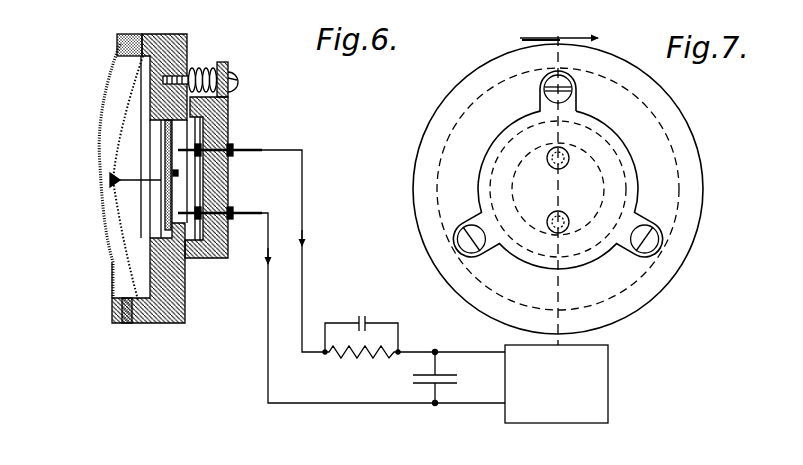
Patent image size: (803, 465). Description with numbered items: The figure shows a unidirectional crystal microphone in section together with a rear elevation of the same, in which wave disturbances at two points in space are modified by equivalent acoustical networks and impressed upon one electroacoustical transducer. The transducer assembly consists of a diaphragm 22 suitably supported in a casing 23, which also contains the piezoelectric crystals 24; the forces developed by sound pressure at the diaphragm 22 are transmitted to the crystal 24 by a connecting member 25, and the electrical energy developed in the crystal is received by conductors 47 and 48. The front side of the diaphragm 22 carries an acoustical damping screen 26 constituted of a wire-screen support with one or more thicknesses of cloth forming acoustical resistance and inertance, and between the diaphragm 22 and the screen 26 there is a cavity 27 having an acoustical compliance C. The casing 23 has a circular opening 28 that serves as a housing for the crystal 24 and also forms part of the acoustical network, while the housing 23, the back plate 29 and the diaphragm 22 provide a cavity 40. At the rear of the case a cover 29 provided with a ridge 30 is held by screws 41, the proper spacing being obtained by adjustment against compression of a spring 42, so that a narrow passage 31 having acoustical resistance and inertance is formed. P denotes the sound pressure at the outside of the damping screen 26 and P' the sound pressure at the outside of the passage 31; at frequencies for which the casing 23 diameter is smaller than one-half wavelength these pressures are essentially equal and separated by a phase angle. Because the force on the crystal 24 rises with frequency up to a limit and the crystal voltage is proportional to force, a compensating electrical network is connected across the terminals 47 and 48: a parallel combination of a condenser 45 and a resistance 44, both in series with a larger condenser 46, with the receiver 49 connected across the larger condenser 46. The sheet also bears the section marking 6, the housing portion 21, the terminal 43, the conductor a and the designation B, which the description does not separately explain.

In FIG. 6, the housing 21 is at (138, 323).
In FIG. 7, the housing 21 is at (432, 204).
In FIG. 6, the diaphragm 22 is at (138, 112).
In FIG. 6, the casing 23 is at (163, 46).
In FIG. 7, the casing 23 is at (432, 138).
In FIG. 6, the piezoelectric crystals 24 is at (178, 173).
In FIG. 6, the connecting member 25 is at (130, 188).
In FIG. 6, the acoustical damping screen 26 is at (100, 157).
In FIG. 6, the cavity 27 is at (112, 150).
In FIG. 6, the circular opening 28 is at (156, 155).
In FIG. 6, the back plate (cover) 29 is at (228, 101).
In FIG. 7, the back plate (cover) 29 is at (500, 133).
In FIG. 6, the ridge 30 is at (200, 266).
In FIG. 6, the narrow passage 31 is at (186, 266).
In FIG. 6, the cavity 40 is at (140, 131).
In FIG. 6, the screws 41 is at (232, 68).
In FIG. 7, the screws 41 is at (573, 97).
In FIG. 6, the spring 42 is at (203, 63).
In FIG. 7, the terminal 43 is at (566, 221).
In FIG. 6, the resistance 44 is at (357, 356).
In FIG. 6, the condenser 45 is at (364, 318).
In FIG. 6, the larger condenser 46 is at (443, 382).
In FIG. 6, the conductor (terminal) 47 is at (247, 148).
In FIG. 7, the conductor (terminal) 47 is at (570, 158).
In FIG. 6, the conductor (terminal) 48 is at (235, 220).
In FIG. 6, the receiver 49 is at (556, 384).
In FIG. 7, the section line 6 is at (559, 27).
In FIG. 6, the sound pressure at the outside of the damping screen P is at (76, 177).
In FIG. 6, the sound pressure at the outside of the passage P' is at (205, 283).
In FIG. 6, the acoustical compliance C is at (383, 308).
In FIG. 6, the conductor a is at (293, 251).
In FIG. 6, the battery B is at (553, 441).